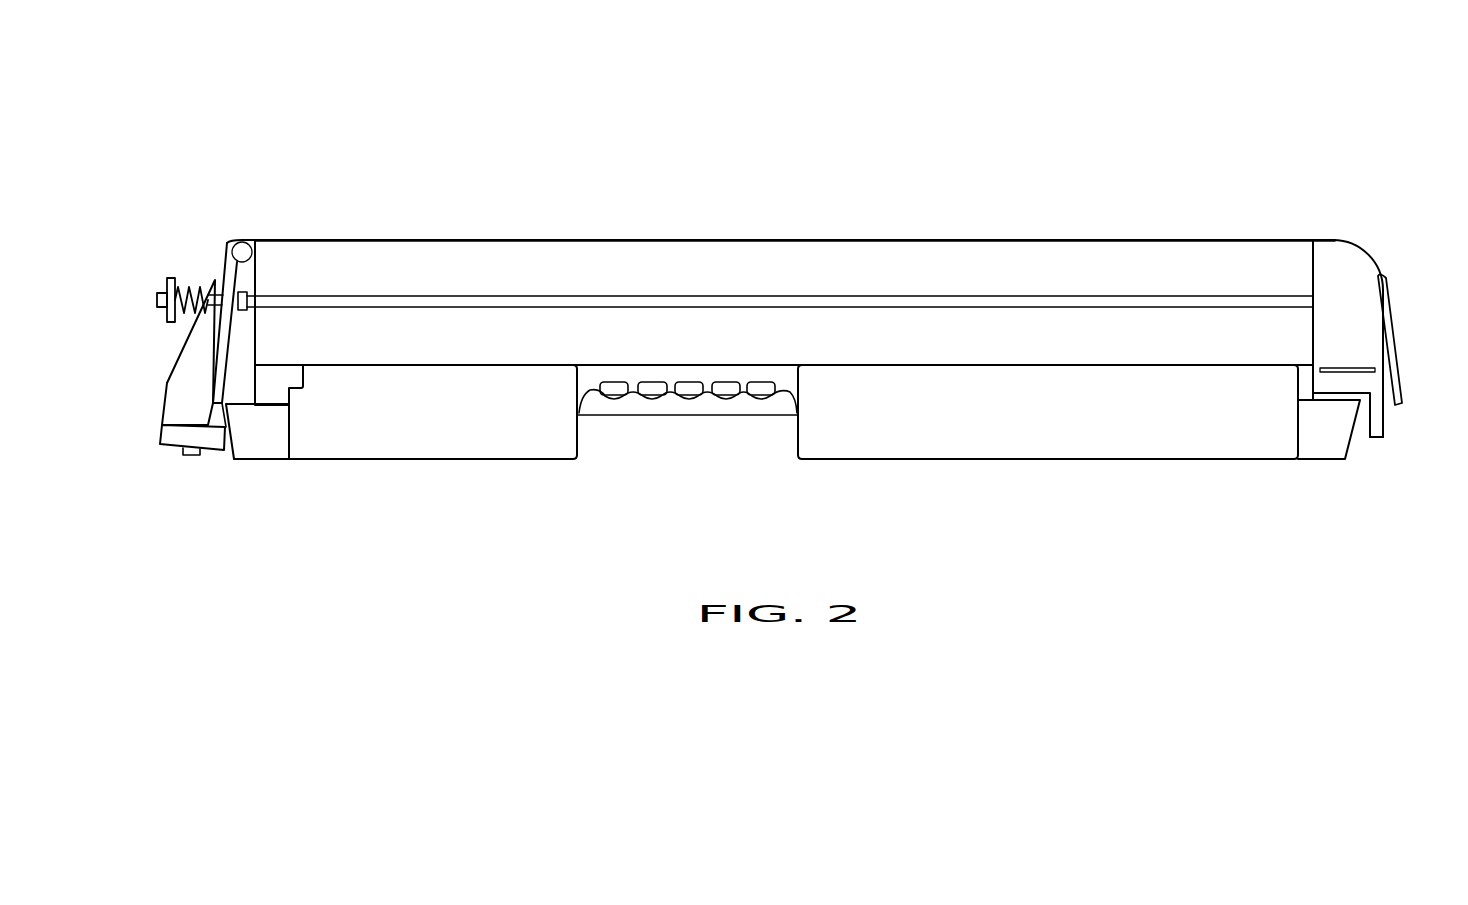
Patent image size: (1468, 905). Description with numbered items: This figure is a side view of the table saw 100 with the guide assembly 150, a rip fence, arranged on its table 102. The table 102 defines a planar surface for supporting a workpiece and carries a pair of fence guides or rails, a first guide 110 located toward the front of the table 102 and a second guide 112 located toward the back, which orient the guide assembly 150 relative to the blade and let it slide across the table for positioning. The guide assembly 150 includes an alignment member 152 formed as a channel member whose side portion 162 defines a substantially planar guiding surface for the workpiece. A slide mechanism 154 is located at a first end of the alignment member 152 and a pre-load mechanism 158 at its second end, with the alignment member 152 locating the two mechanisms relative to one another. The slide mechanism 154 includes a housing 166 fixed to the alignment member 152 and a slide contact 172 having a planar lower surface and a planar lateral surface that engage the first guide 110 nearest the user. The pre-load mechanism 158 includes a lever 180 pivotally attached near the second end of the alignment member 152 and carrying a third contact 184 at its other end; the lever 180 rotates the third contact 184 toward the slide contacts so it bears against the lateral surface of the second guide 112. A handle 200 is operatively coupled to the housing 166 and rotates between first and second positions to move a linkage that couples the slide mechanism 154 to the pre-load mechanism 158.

The table saw 100 is at (217, 125).
The table 102 is at (1053, 462).
The first guide 110 is at (1320, 462).
The second guide 112 is at (278, 463).
The guide assembly 150 is at (1167, 182).
The alignment member 152 is at (942, 237).
The slide mechanism 154 is at (1393, 237).
The pre-load mechanism 158 is at (155, 348).
The side portion 162 is at (508, 268).
The housing 166 is at (1338, 240).
The slide contact 172 is at (1360, 437).
The lever 180 is at (165, 395).
The third contact 184 is at (175, 452).
The handle 200 is at (1398, 357).